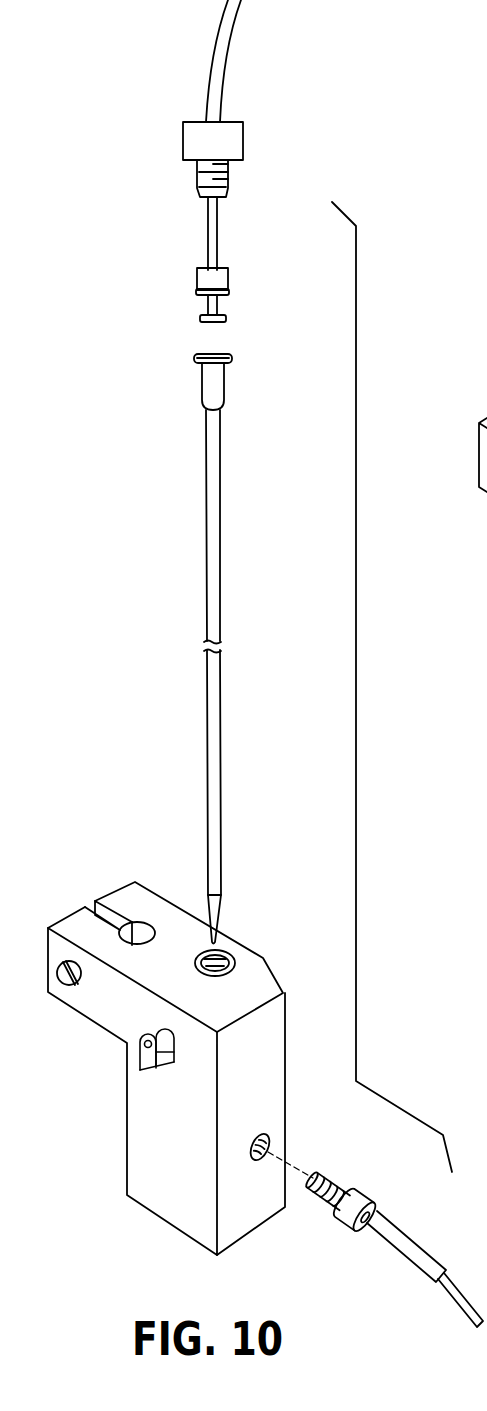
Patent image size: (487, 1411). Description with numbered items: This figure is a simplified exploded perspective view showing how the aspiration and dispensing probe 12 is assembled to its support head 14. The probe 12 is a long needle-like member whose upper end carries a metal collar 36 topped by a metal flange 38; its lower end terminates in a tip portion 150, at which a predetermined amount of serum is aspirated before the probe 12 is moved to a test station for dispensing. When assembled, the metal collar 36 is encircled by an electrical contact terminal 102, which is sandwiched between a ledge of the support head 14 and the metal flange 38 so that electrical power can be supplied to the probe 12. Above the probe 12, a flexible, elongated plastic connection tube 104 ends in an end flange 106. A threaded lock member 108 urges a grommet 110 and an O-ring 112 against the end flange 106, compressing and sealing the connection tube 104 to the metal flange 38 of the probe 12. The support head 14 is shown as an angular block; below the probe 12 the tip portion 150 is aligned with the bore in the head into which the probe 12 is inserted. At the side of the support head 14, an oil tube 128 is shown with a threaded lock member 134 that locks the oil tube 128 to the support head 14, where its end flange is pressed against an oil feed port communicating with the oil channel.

The aspiration and dispensing probe 12 is at (206, 527).
The support head 14 is at (127, 1157).
The metal collar 36 is at (224, 385).
The metal flange 38 is at (194, 358).
The electrical contact terminal 102 is at (140, 1053).
The plastic connection tube 104 is at (218, 235).
The end flange 106 is at (226, 319).
The threaded lock member 108 is at (183, 140).
The grommet 110 is at (197, 278).
The O-ring 112 is at (196, 294).
The oil tube 128 is at (412, 1240).
The threaded lock member 134 is at (360, 1192).
The tip portion 150 is at (222, 921).